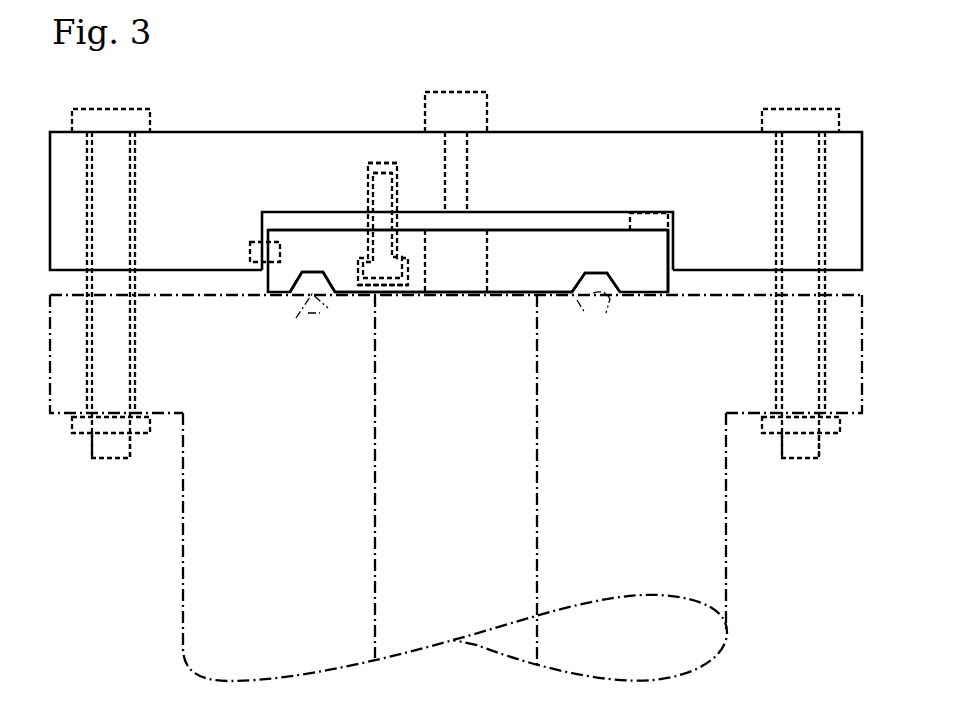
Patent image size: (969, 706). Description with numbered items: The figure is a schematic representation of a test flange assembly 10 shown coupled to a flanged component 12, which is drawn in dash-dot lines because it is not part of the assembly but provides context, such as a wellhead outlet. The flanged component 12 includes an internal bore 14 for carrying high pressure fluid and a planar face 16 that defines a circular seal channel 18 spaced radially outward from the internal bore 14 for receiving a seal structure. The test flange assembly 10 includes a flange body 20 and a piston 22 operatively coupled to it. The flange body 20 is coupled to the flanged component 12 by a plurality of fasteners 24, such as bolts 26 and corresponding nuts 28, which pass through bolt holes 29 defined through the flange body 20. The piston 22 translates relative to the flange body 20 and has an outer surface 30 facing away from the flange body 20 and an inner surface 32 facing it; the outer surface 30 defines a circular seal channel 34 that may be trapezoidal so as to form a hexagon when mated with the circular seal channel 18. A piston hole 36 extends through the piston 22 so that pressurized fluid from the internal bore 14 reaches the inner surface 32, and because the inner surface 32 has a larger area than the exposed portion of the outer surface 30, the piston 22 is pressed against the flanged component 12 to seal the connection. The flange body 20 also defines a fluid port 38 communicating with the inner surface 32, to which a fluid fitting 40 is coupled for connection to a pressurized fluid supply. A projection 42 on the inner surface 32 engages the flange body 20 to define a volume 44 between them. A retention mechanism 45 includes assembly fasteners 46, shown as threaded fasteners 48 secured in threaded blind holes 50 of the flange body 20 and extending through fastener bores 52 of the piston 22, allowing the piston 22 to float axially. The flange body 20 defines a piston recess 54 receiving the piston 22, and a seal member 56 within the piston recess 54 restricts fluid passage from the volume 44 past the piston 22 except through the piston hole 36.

The test flange assembly 10 is at (819, 41).
The flanged component 12 is at (731, 541).
The internal bore 14 is at (537, 498).
The planar face 16 is at (199, 293).
The circular seal channel 18 is at (306, 316).
The flange body 20 is at (640, 127).
The piston 22 is at (565, 224).
The fasteners 24 is at (115, 104).
The bolts 26 is at (108, 460).
The nuts 28 is at (83, 434).
The bolt holes 29 is at (132, 196).
The outer surface 30 is at (499, 294).
The inner surface 32 is at (520, 229).
The circular seal channel 34 is at (302, 278).
The piston hole 36 is at (487, 260).
The fluid port 38 is at (467, 177).
The fluid fitting 40 is at (488, 105).
The projection 42 is at (645, 211).
The volume 44 is at (301, 223).
The retention mechanism 45 is at (363, 152).
The assembly fasteners 46 is at (362, 187).
The threaded fasteners 48 is at (385, 175).
The threaded blind holes 50 is at (385, 190).
The fastener bores 52 is at (377, 282).
The piston recess 54 is at (668, 258).
The seal member 56 is at (250, 252).